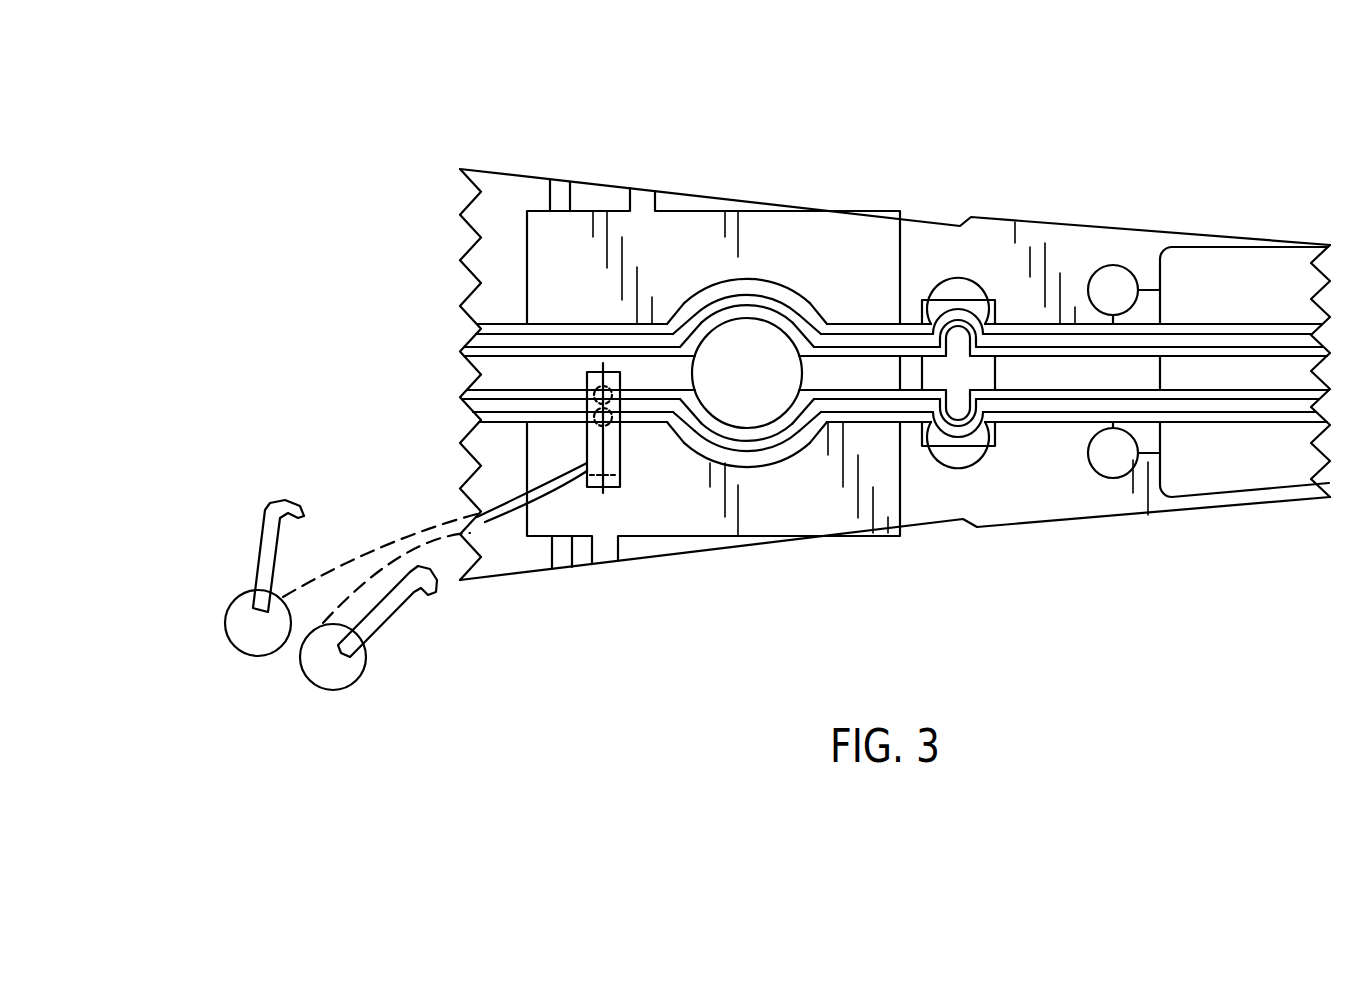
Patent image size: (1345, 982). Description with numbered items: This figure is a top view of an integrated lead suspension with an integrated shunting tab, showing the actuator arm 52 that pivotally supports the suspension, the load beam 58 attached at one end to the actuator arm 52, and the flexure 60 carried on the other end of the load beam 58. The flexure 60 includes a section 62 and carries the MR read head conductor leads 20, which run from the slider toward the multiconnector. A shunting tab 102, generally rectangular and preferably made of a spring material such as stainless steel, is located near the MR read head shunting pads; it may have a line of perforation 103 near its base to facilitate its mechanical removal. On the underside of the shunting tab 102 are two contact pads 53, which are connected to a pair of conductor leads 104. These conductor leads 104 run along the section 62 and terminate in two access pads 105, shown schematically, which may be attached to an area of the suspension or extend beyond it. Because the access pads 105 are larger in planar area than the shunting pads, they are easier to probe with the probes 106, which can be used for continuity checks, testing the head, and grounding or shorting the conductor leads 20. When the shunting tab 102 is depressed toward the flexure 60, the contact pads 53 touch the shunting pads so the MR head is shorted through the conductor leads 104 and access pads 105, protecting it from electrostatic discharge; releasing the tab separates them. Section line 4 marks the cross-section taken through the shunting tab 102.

The MR read head conductor leads 20 is at (1056, 413).
The actuator arm 52 is at (502, 190).
The contact pads 53 is at (595, 419).
The load beam 58 is at (1060, 243).
The flexure 60 is at (1262, 270).
The section 62 is at (767, 227).
The shunting tab 102 is at (580, 382).
The line of perforation 103 is at (620, 472).
The conductor leads 104 is at (506, 530).
The access pads 105 is at (257, 647).
The probes 106 is at (264, 549).
The section line 4- 4 is at (634, 493).